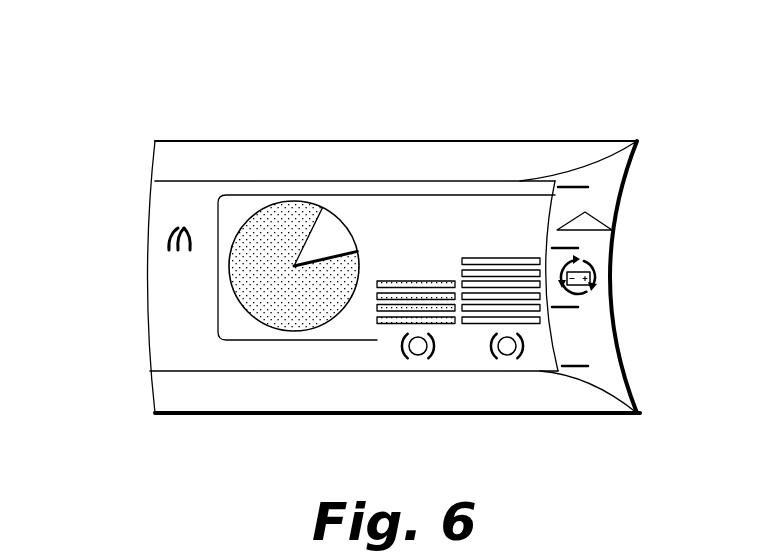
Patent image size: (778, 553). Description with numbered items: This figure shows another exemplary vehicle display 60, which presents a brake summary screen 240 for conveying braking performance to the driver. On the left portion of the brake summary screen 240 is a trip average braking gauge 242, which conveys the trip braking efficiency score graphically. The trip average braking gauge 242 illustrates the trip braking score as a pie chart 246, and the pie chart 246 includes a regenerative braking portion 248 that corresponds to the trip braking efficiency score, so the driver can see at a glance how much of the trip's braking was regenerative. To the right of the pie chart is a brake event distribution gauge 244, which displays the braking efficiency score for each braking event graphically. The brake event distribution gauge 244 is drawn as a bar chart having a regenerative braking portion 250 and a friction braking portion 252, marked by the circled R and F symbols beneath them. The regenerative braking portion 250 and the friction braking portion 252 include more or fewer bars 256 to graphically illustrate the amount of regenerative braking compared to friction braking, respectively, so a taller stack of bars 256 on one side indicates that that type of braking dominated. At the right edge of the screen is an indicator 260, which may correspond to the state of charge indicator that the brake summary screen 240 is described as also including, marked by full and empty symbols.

The display screen 60 is at (196, 86).
The brake summary screen 240 is at (147, 307).
The trip average braking gauge 242 is at (268, 200).
The brake event distribution gauge 244 is at (418, 280).
The pie chart 246 is at (341, 230).
The regenerative braking portion 248 is at (262, 232).
The regenerative braking portion 250 is at (418, 358).
The friction braking portion 252 is at (507, 358).
The bars 256 is at (503, 258).
The fuel gauge 260 is at (597, 222).